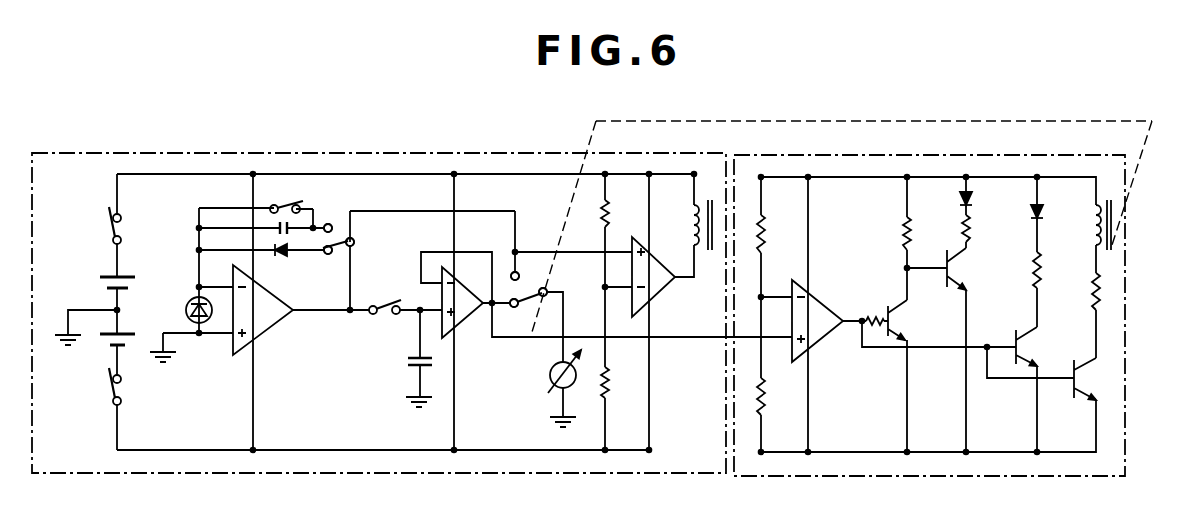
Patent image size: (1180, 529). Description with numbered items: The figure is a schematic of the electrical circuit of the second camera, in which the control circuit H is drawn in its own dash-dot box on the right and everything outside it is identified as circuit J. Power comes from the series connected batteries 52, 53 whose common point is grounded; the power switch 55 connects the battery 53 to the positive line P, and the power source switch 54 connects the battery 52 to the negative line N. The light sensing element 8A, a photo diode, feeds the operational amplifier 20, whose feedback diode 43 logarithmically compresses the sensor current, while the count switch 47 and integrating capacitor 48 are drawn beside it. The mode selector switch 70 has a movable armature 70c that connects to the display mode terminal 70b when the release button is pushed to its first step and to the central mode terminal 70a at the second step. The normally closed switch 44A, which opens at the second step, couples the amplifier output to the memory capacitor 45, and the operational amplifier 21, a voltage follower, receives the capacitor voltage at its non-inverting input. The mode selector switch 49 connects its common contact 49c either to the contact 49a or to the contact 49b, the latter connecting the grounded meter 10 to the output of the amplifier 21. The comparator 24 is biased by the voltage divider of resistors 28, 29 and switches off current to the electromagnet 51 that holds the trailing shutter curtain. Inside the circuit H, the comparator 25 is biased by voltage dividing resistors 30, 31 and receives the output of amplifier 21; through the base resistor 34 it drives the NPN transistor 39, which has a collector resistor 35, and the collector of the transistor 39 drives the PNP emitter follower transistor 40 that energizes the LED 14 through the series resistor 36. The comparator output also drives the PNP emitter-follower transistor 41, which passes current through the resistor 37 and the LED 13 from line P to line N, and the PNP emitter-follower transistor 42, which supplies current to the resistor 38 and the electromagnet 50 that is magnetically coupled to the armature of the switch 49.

The positive line P is at (180, 153).
The circuit outside circuit H J is at (253, 153).
The negative line N is at (229, 448).
The control circuit H is at (862, 477).
The power switch 55 is at (108, 231).
The battery 53 is at (98, 284).
The battery 52 is at (108, 342).
The power source switch 54 is at (112, 396).
The light sensing element 8A is at (185, 306).
The operational amplifier 20 is at (270, 342).
The count switch 47 is at (276, 190).
The integrating capacitor 48 is at (288, 224).
The diode 43 is at (282, 256).
The mode selector switch 70 is at (353, 238).
The central mode terminal 70a is at (332, 224).
The display mode terminal 70b is at (328, 254).
The movable armature 70c is at (354, 246).
The normally closed switch 44A is at (384, 316).
The memory capacitor 45 is at (404, 362).
The operational amplifier 21 is at (462, 327).
The mode selector switch 49 is at (525, 306).
The contact 49a is at (510, 272).
The contact 49b is at (512, 308).
The common contact 49c is at (547, 289).
The meter 10 is at (550, 392).
The resistor 28 is at (610, 215).
The resistor 29 is at (608, 385).
The comparator 24 is at (660, 293).
The electromagnet 51 is at (704, 248).
The voltage dividing resistor 30 is at (766, 236).
The voltage dividing resistor 31 is at (764, 400).
The comparator 25 is at (822, 344).
The base resistor 34 is at (874, 316).
The collector resistor 35 is at (902, 236).
The transistor 39 is at (904, 318).
The LED 14 is at (958, 200).
The series resistor 36 is at (972, 230).
The PNP emitter follower transistor 40 is at (958, 268).
The LED 13 is at (1042, 210).
The resistor 37 is at (1042, 276).
The resistor 38 is at (1092, 298).
The PNP emitter-follower transistor 41 is at (1032, 346).
The PNP emitter-follower transistor 42 is at (1082, 378).
The electromagnet 50 is at (1113, 228).